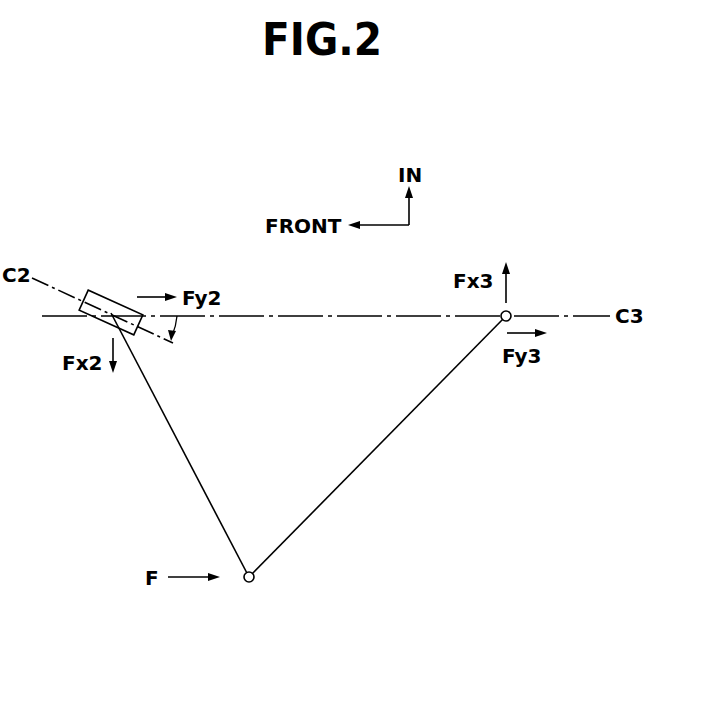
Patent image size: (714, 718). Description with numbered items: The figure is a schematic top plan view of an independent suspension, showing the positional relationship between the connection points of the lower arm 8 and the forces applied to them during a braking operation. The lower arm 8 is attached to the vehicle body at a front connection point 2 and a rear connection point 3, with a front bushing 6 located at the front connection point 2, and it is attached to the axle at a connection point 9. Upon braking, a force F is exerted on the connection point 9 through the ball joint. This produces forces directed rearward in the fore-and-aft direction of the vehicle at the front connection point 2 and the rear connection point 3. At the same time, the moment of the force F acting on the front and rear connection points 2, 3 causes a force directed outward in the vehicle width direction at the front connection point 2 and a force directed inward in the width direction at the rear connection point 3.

The front connection point 2 is at (118, 307).
The rear connection point 3 is at (511, 311).
The front bushing 6 is at (98, 288).
The lower arm 8 is at (392, 452).
The connection point 9 is at (257, 576).